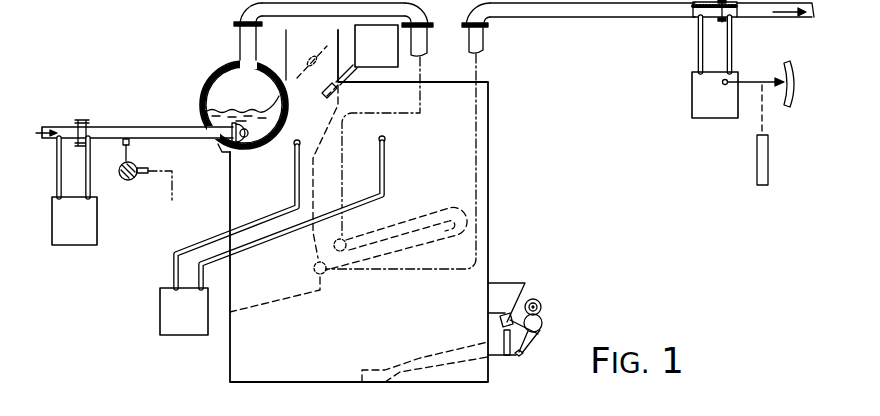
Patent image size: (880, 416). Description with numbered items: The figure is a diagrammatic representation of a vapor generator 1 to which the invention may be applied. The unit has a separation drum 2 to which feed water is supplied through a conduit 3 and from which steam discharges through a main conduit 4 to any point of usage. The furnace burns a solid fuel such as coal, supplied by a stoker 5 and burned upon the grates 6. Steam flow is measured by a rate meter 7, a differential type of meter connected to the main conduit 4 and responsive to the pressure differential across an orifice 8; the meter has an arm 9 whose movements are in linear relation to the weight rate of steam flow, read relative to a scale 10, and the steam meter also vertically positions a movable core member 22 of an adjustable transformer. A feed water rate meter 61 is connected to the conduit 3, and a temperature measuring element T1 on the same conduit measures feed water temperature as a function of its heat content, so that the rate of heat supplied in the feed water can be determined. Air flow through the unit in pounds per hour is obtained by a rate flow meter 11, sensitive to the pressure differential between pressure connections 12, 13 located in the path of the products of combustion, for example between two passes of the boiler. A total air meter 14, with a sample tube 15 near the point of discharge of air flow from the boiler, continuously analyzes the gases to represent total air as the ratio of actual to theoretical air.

The vapor generator 1 is at (364, 303).
The separation drum 2 is at (213, 80).
The conduit 3 is at (158, 127).
The main conduit 4 is at (522, 18).
The stoker 5 is at (544, 303).
The grates 6 is at (413, 356).
The rate meter 7 is at (680, 100).
The orifice 8 is at (718, 20).
The arm 9 is at (748, 80).
The scale 10 is at (793, 62).
The rate flow meter 11 is at (160, 312).
The pressure connection 12 is at (297, 140).
The pressure connection 13 is at (380, 140).
The total air meter 14 is at (393, 68).
The sample tube 15 is at (322, 96).
The movable core member 22 is at (757, 162).
The feed water rate meter 61 is at (97, 222).
The temperature measuring element T1 is at (142, 147).